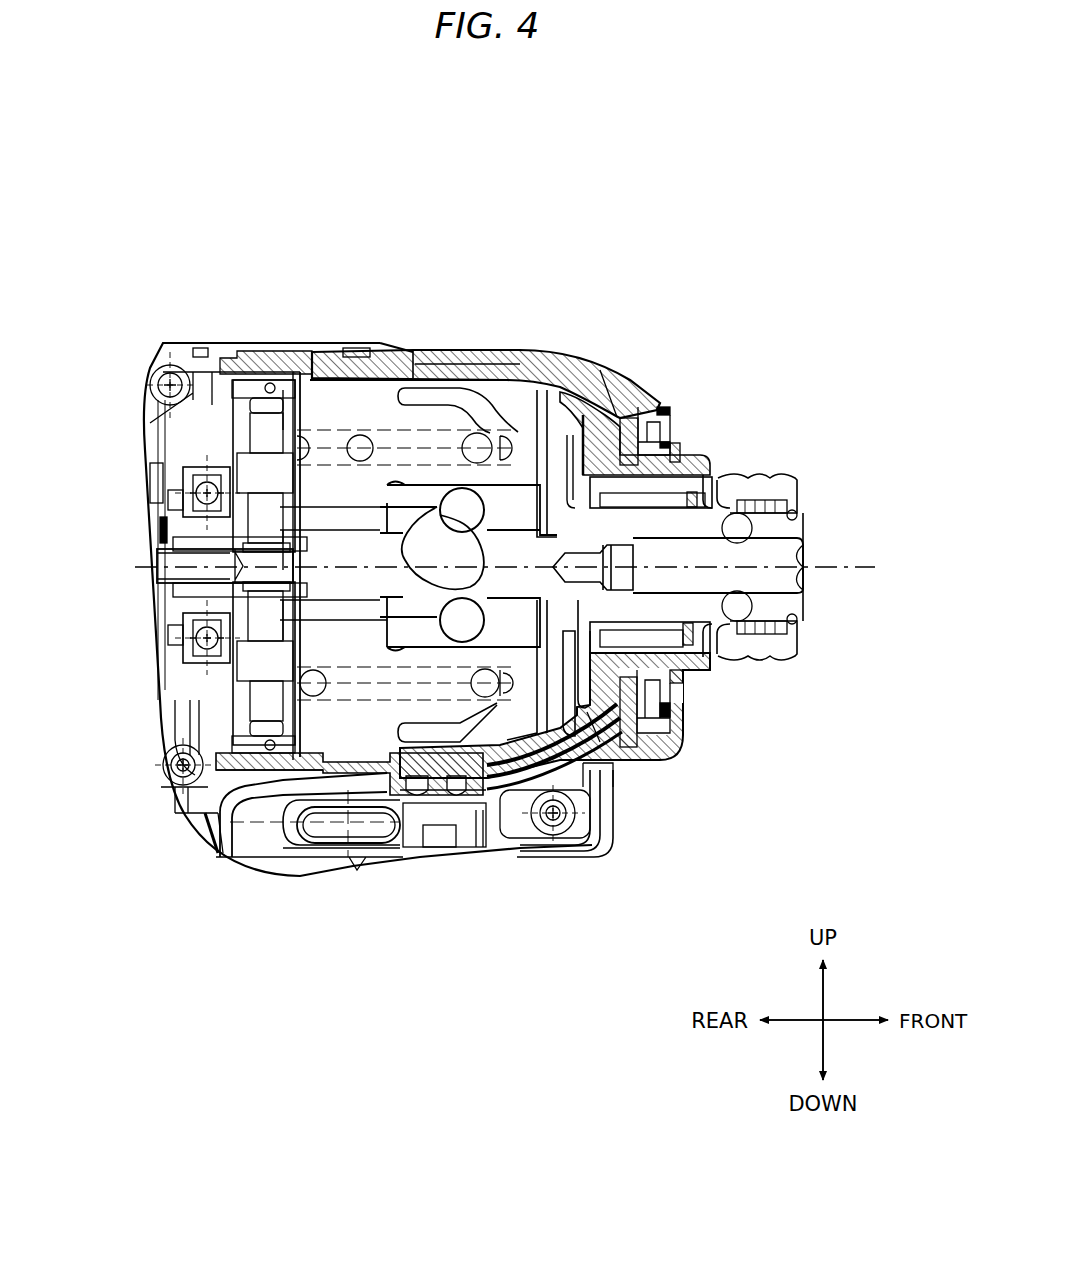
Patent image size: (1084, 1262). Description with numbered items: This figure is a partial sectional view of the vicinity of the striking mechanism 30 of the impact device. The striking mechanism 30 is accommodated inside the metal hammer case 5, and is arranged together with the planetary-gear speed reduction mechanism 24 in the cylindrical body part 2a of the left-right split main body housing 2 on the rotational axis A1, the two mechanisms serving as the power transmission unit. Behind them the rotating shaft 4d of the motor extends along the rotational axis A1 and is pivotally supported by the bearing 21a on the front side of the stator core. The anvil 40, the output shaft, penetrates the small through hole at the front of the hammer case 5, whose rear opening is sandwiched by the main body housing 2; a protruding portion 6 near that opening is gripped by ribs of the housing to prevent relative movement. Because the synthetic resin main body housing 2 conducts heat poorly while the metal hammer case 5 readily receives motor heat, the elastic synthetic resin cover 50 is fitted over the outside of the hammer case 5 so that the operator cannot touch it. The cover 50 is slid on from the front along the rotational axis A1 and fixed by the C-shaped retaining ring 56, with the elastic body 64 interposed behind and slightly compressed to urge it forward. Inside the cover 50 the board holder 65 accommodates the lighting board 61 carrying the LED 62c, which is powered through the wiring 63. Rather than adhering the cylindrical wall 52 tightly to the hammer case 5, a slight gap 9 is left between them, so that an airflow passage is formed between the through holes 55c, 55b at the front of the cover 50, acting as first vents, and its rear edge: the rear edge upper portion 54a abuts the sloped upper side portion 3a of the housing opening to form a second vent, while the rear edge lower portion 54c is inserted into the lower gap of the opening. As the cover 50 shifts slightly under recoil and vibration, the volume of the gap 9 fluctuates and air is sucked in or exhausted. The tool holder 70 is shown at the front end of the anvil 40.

The main body housing 2 is at (182, 346).
The body part 2a is at (104, 463).
The speed reduction mechanism 24 is at (247, 368).
The hammer case 5 is at (332, 368).
The upper side portion 3a is at (379, 260).
The rear edge upper portion 54a is at (409, 340).
The gap 9 is at (457, 364).
The cylindrical wall 52 is at (488, 352).
The striking mechanism 30 is at (520, 395).
The cover 50 is at (545, 355).
The elastic body 64 is at (667, 870).
The lighting board 61 is at (630, 418).
The board holder 65 is at (665, 418).
The LED 62c is at (665, 404).
The through hole 55c is at (673, 432).
The retaining ring 56 is at (682, 458).
The through hole 55b is at (672, 703).
The rotating shaft 4d is at (158, 558).
The bearing 21a is at (203, 643).
The protruding portion 6 is at (393, 795).
The rear edge lower portion 54c is at (597, 772).
The wiring 63 is at (610, 724).
The anvil 40 is at (715, 628).
The tool holder 70 is at (800, 655).
The rotational axis A1 is at (521, 568).